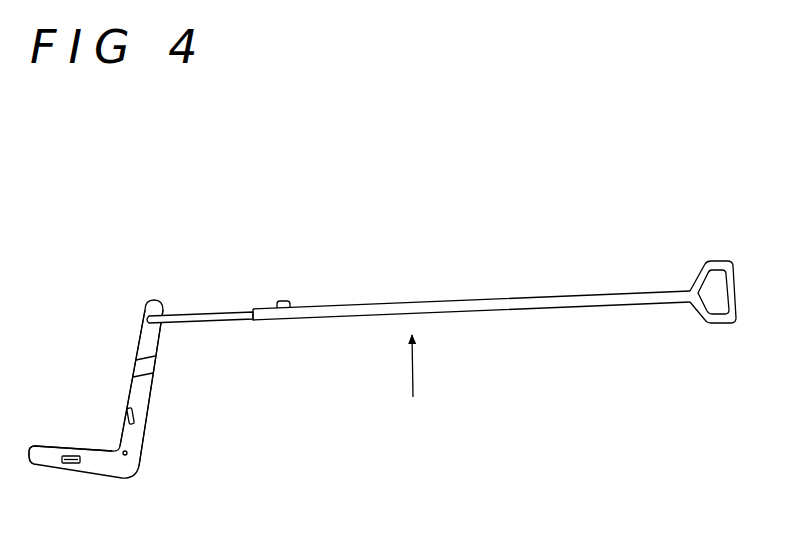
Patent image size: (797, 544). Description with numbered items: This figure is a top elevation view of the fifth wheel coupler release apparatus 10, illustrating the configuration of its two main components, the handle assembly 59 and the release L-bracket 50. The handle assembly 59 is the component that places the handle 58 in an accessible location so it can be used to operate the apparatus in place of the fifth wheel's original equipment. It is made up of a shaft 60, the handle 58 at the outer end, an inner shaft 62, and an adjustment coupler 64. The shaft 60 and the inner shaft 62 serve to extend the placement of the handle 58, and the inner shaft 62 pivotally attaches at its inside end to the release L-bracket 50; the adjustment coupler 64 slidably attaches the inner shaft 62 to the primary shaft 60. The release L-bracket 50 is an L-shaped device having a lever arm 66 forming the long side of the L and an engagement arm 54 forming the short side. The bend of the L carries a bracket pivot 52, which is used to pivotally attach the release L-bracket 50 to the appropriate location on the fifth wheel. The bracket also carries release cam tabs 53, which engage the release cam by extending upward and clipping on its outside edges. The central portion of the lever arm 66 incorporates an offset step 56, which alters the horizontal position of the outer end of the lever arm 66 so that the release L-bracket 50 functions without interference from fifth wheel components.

The fifth wheel coupler release apparatus 10 is at (350, 247).
The release L-bracket 50 is at (155, 422).
The bracket pivot 52 is at (132, 454).
The release cam tabs 53 is at (68, 468).
The engagement arm 54 is at (63, 443).
The offset step 56 is at (160, 373).
The handle 58 is at (693, 273).
The handle assembly 59 is at (412, 381).
The shaft 60 is at (452, 298).
The inner shaft 62 is at (210, 308).
The adjustment coupler 64 is at (282, 295).
The lever arm 66 is at (133, 335).